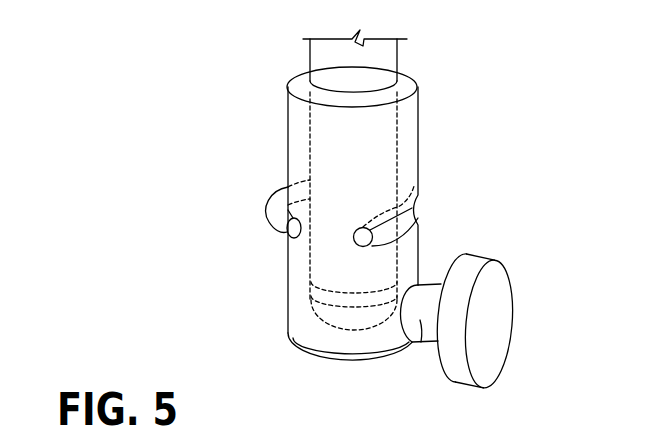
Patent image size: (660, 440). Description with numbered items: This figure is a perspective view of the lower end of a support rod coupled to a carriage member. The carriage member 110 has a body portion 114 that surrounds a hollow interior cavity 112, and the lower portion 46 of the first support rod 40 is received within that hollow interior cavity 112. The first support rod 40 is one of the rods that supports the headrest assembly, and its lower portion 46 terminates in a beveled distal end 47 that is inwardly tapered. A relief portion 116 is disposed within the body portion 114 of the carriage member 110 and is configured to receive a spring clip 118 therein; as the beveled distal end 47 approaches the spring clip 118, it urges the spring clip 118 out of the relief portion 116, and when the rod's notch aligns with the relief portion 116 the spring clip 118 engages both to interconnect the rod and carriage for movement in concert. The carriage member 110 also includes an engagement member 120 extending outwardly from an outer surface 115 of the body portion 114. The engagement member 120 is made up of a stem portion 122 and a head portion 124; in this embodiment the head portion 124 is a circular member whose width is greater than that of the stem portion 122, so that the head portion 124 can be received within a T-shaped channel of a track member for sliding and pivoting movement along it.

The first support rod 40 is at (385, 55).
The carriage member 110 is at (438, 133).
The body portion 114 is at (288, 118).
The outer surface 115 is at (418, 170).
The relief portion 116 is at (432, 214).
The spring clip 118 is at (256, 208).
The lower portion 46 is at (310, 286).
The hollow interior cavity 112 is at (307, 332).
The beveled distal end 47 is at (391, 356).
The engagement member 120 is at (532, 322).
The stem portion 122 is at (421, 342).
The head portion 124 is at (488, 332).